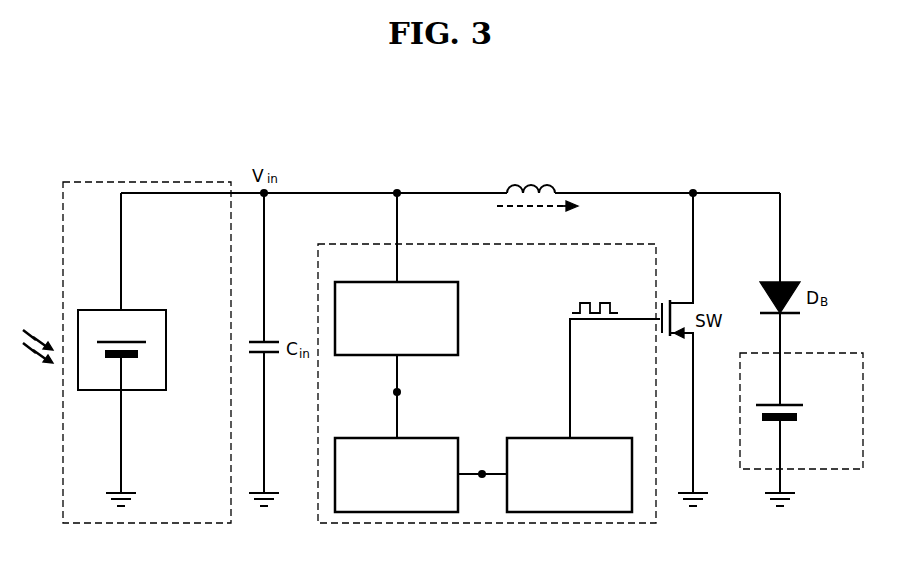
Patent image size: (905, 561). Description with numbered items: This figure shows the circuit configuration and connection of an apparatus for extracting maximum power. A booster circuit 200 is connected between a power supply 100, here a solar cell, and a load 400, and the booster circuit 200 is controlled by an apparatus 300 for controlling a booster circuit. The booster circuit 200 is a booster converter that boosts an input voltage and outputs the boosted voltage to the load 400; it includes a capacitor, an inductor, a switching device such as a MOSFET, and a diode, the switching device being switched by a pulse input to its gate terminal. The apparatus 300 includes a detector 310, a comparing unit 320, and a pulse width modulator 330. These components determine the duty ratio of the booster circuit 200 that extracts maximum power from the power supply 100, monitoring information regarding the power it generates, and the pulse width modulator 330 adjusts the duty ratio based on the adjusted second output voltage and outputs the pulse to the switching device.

The power supply 100 is at (174, 182).
The booster circuit 200 is at (584, 179).
The apparatus for controlling a booster circuit 300 is at (600, 244).
The detector 310 is at (420, 281).
The comparing unit 320 is at (420, 437).
The pulse width modulator 330 is at (592, 437).
The load 400 is at (800, 352).